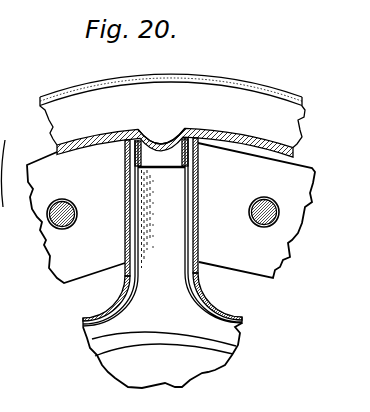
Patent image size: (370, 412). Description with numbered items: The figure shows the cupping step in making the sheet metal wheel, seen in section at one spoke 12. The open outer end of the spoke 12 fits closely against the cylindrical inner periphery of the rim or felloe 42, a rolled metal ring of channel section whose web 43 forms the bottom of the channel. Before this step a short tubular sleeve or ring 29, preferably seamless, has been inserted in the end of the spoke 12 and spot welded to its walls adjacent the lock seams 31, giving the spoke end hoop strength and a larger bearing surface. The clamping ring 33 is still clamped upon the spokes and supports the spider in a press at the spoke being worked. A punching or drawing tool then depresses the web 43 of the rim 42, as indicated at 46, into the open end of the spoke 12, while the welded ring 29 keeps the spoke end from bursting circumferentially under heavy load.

The spoke 12 is at (176, 190).
The tubular sleeve or ring 29 is at (139, 158).
The lock seam 31 is at (126, 218).
The clamping ring 33 is at (270, 258).
The rim or felloe 42 is at (248, 103).
The web 43 is at (273, 150).
The depression 46 is at (163, 141).